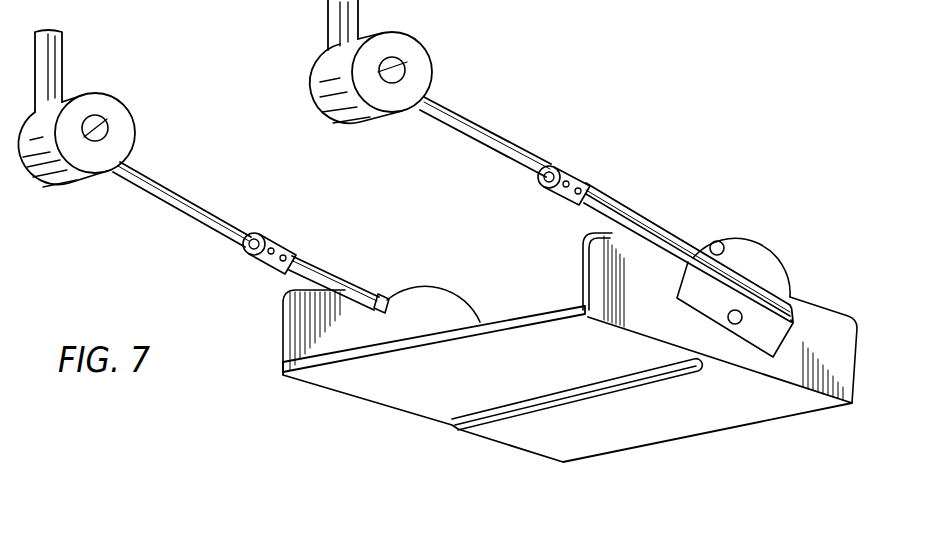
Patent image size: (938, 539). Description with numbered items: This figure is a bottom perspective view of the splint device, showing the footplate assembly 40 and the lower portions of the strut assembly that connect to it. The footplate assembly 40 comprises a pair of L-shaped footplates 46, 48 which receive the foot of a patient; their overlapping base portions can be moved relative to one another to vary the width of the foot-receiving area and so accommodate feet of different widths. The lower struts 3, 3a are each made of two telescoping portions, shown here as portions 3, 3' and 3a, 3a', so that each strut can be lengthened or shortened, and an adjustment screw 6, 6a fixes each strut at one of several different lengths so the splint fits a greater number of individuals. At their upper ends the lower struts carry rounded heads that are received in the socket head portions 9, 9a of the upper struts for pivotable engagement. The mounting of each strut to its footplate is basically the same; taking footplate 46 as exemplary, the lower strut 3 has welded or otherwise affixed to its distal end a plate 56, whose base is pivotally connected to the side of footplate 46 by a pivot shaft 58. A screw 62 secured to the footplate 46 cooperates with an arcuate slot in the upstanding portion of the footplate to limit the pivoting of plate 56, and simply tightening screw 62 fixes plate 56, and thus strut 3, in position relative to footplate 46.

The lower strut 3 is at (384, 277).
The telescoping portion 3' is at (182, 201).
The lower strut 3a is at (688, 231).
The telescoping portion 3a' is at (488, 136).
The adjustment screw 6 is at (281, 243).
The adjustment screw 6a is at (556, 204).
The socket head portion 9 is at (120, 130).
The socket head portion 9a is at (388, 103).
The footplate assembly 40 is at (864, 384).
The footplate 46 is at (810, 310).
The footplate 48 is at (518, 400).
The plate 56 is at (770, 250).
The pivot shaft 58 is at (728, 320).
The screw 62 is at (717, 241).